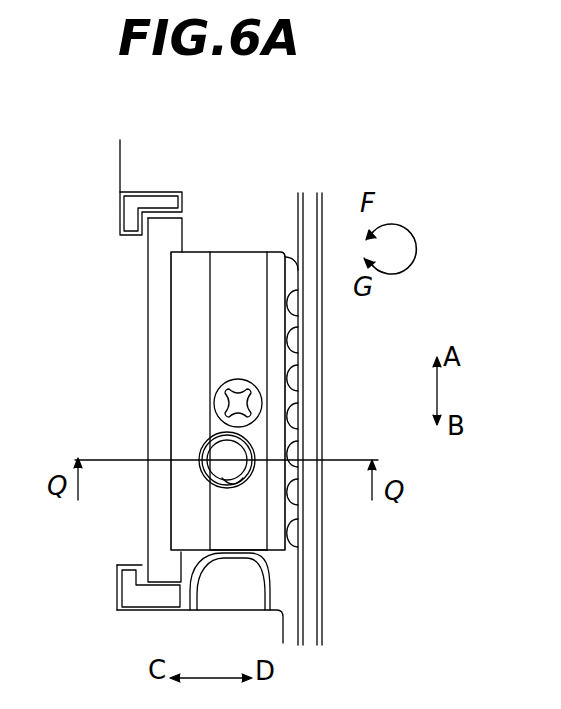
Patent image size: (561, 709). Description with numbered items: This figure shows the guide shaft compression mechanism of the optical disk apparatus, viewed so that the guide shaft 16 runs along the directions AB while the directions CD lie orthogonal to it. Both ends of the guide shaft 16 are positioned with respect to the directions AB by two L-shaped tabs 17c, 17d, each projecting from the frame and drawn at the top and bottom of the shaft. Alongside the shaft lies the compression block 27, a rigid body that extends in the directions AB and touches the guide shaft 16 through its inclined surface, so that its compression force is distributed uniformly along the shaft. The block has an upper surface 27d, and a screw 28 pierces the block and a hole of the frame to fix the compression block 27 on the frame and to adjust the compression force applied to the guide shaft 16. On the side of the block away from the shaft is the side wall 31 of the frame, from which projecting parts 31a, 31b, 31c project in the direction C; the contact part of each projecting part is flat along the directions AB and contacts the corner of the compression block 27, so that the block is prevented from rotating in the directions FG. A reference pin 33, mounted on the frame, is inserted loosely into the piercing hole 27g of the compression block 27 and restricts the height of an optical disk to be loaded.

The guide shaft 16 is at (146, 300).
The L-shaped tab 17c is at (120, 213).
The L-shaped tab 17d is at (130, 596).
The compression block 27 is at (166, 345).
The upper surface 27d is at (225, 265).
The piercing hole 27g is at (232, 463).
The screw 28 is at (213, 405).
The side wall 31 is at (312, 393).
The projecting part 31a is at (283, 290).
The projecting part 31b is at (282, 398).
The projecting part 31c is at (238, 538).
The reference pin 33 is at (212, 466).